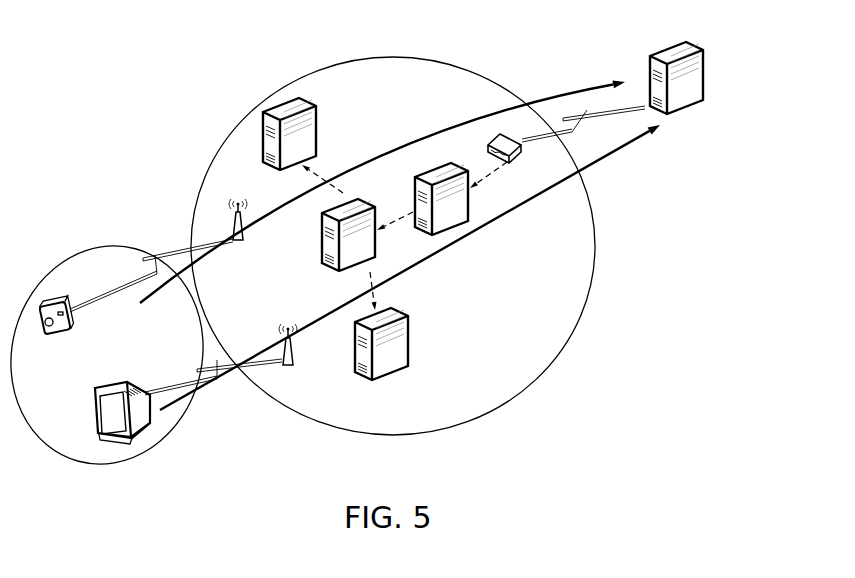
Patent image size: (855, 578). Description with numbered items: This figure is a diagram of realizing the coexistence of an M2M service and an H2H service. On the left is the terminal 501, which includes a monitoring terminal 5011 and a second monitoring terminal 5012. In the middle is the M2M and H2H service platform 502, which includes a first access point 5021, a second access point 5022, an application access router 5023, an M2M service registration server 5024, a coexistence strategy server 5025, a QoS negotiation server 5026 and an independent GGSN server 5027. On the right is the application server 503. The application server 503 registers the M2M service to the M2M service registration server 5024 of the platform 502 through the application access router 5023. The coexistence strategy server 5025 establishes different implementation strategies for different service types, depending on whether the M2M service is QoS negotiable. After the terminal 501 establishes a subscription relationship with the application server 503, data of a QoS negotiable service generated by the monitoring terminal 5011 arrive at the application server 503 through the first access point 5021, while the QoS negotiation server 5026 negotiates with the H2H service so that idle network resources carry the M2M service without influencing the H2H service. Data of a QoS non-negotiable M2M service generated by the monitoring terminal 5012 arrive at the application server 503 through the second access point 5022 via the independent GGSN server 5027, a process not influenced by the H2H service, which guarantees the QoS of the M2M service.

The terminal 501 is at (46, 248).
The monitoring terminal 5011 is at (47, 298).
The monitoring terminal 5012 is at (109, 383).
The M2M and H2H service platform 502 is at (595, 265).
The AN1 access point 5021 is at (242, 208).
The AN2 access point 5022 is at (293, 332).
The application access router 5023 is at (491, 134).
The M2M service registration server 5024 is at (468, 211).
The coexistence strategy server 5025 is at (356, 196).
The QoS negotiation server 5026 is at (310, 104).
The independent GGSN server 5027 is at (396, 314).
The application server 503 is at (693, 47).